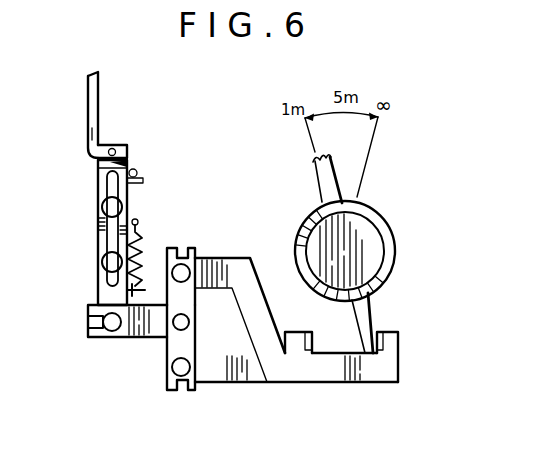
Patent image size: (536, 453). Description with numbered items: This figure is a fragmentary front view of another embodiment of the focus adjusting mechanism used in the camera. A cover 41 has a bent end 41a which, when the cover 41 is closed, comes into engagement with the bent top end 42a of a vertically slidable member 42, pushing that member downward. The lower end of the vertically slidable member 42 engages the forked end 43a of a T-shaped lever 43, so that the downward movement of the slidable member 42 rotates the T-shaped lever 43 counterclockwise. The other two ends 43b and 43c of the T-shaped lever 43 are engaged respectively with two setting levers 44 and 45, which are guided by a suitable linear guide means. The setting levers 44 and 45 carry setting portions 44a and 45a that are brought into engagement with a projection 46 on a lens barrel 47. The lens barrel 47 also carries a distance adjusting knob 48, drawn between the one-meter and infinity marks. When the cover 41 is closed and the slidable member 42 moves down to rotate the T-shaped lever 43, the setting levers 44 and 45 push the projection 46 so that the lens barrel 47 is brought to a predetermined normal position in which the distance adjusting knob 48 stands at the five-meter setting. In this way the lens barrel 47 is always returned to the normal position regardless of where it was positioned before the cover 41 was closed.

The cover 41 is at (88, 104).
The bent end of cover 41a is at (117, 146).
The vertically slidable member 42 is at (98, 196).
The bent top end of slidable member 42a is at (128, 165).
The T-shaped lever 43 is at (151, 336).
The forked end of T-shaped lever 43a is at (97, 338).
The end of T-shaped lever 43b is at (176, 253).
The end of T-shaped lever 43c is at (172, 391).
The setting lever 44 is at (242, 261).
The setting portion 44a is at (384, 341).
The setting lever 45 is at (248, 380).
The setting portion 45a is at (302, 335).
The projection of lens barrel 46 is at (365, 312).
The lens barrel 47 is at (391, 236).
The distance adjusting knob 48 is at (317, 176).